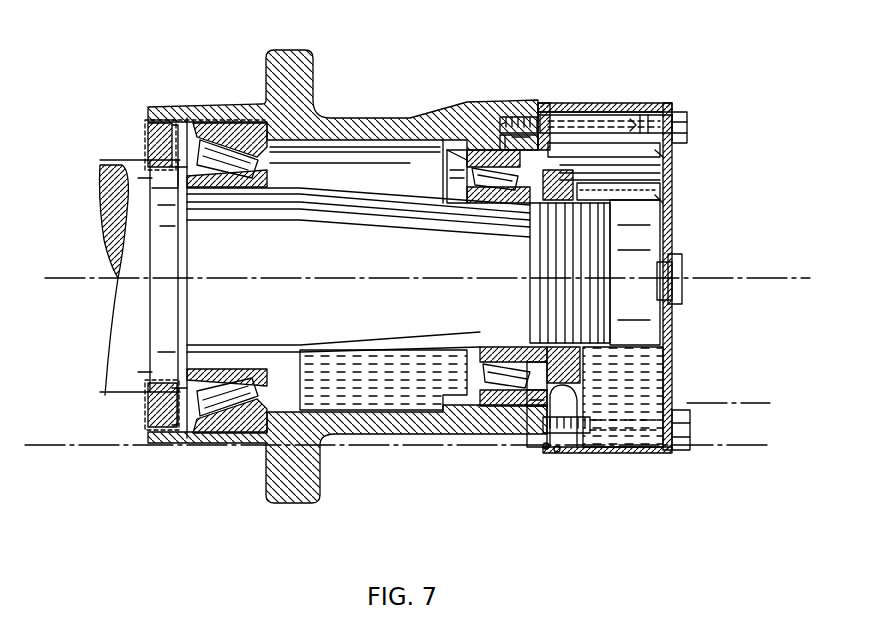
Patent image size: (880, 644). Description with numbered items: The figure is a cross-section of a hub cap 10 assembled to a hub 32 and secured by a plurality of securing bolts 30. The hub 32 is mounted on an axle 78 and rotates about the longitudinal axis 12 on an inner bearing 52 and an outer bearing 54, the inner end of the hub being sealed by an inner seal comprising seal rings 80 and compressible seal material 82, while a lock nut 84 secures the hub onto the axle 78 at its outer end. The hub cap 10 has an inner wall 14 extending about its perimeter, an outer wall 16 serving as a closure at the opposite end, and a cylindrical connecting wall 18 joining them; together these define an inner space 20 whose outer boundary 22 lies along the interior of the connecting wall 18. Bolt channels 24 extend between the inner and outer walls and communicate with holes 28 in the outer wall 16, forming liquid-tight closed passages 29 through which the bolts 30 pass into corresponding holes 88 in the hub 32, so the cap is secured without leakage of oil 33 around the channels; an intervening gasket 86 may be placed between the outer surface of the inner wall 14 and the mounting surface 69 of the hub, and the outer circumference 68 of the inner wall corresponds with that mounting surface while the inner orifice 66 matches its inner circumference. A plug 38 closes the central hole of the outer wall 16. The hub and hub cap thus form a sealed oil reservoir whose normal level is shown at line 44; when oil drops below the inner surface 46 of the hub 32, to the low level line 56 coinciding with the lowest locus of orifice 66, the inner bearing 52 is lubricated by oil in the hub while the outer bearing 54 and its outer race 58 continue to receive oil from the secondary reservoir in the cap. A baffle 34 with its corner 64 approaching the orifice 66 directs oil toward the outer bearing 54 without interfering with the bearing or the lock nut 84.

The hub cap 10 is at (602, 97).
The longitudinal axis 12 is at (78, 277).
The inner wall 14 is at (557, 452).
The outer wall 16 is at (673, 357).
The connecting wall 18 is at (570, 103).
The inner space 20 is at (670, 178).
The outer boundary 22 is at (730, 447).
The bolt channels 24 is at (620, 103).
The holes in outer wall 28 is at (657, 100).
The closed passage 29 is at (637, 100).
The securing bolts 30 is at (687, 123).
The hub 32 is at (372, 112).
The oil 33 is at (388, 387).
The baffle 34 is at (673, 157).
The plug 38 is at (687, 267).
The normal oil level line 44 is at (673, 323).
The inner surface of hub 46 is at (480, 443).
The inner bearing 52 is at (220, 440).
The outer bearing 54 is at (493, 207).
The low oil level line 56 is at (717, 403).
The outer race 58 is at (510, 447).
The corner of baffle 64 is at (468, 102).
The inner orifice 66 is at (733, 407).
The outer circumference of inner wall 68 is at (547, 450).
The mounting surface 69 is at (550, 107).
The axle 78 is at (286, 266).
The seal rings 80 is at (180, 107).
The compressible seal material 82 is at (150, 127).
The lock nut 84 is at (610, 453).
The gasket 86 is at (537, 103).
The holes in hub 88 is at (500, 100).